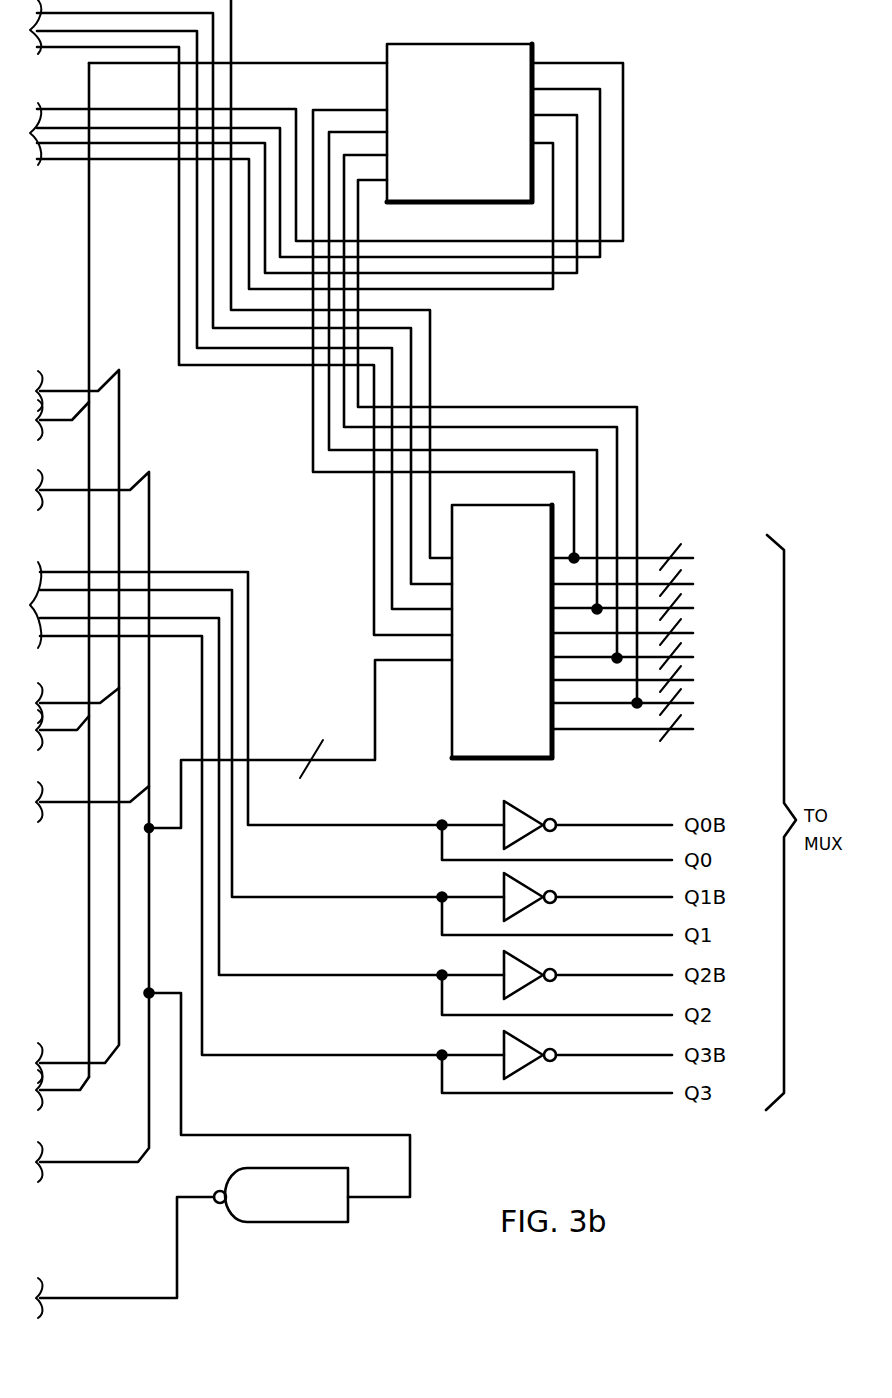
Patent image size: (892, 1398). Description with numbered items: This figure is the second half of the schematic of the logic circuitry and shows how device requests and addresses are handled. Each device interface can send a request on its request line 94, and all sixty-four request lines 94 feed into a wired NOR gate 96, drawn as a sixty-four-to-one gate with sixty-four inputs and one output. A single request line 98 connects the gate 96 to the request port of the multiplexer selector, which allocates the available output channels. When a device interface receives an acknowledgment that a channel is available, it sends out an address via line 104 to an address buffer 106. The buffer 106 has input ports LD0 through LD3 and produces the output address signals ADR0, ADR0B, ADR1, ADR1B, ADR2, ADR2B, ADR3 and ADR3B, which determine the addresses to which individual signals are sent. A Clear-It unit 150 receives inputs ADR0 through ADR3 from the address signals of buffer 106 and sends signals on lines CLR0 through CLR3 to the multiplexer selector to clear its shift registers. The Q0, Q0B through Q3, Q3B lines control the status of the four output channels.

The Clear-It unit 150 is at (533, 50).
The address line 104 is at (120, 432).
The address buffer 106 is at (450, 734).
The request line 94 is at (245, 1135).
The wired NOR gate 96 is at (275, 1222).
The single request line 98 is at (117, 1298).